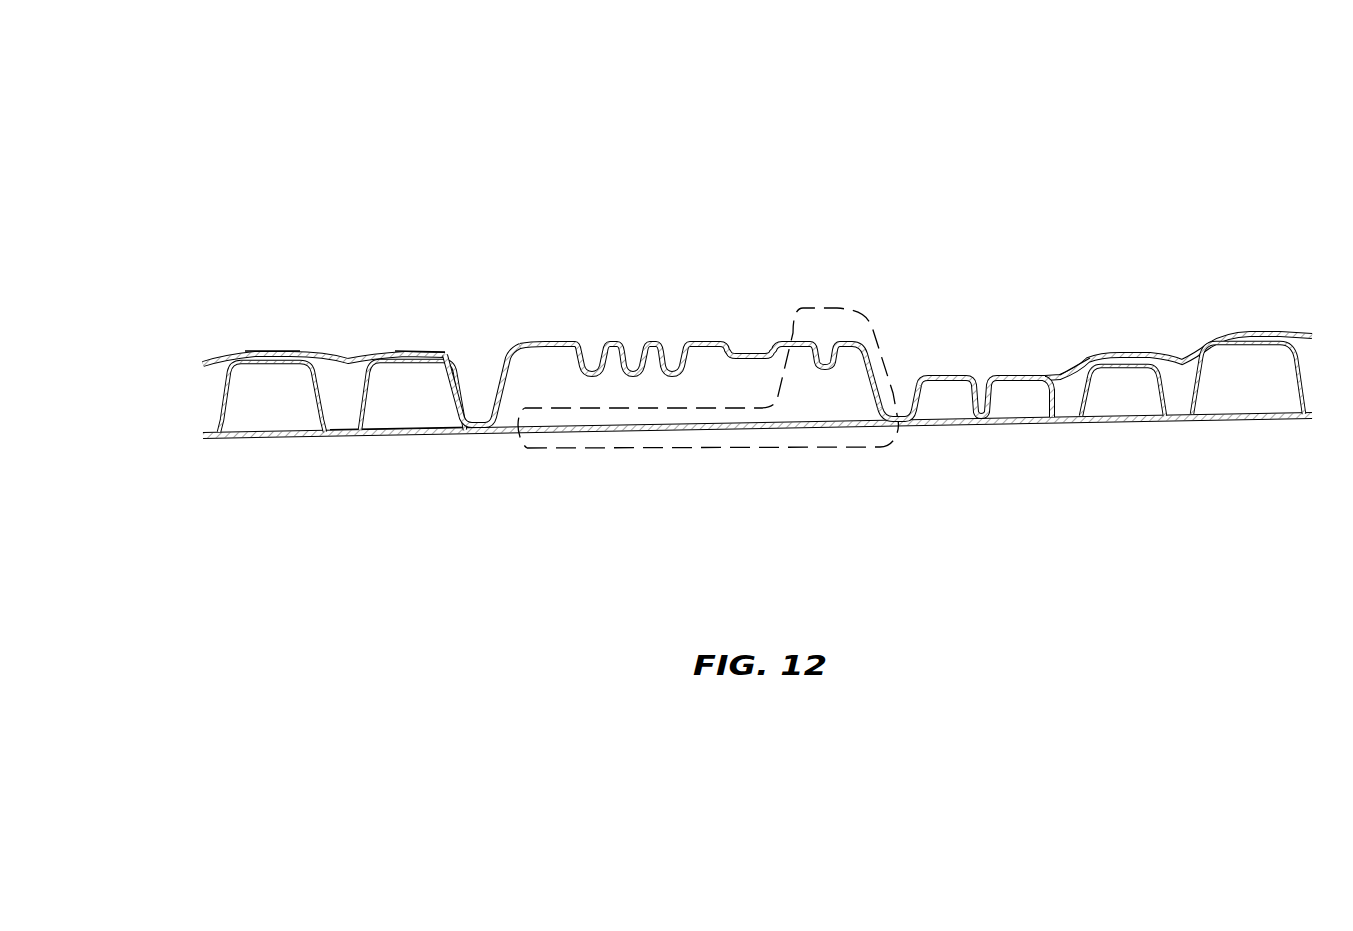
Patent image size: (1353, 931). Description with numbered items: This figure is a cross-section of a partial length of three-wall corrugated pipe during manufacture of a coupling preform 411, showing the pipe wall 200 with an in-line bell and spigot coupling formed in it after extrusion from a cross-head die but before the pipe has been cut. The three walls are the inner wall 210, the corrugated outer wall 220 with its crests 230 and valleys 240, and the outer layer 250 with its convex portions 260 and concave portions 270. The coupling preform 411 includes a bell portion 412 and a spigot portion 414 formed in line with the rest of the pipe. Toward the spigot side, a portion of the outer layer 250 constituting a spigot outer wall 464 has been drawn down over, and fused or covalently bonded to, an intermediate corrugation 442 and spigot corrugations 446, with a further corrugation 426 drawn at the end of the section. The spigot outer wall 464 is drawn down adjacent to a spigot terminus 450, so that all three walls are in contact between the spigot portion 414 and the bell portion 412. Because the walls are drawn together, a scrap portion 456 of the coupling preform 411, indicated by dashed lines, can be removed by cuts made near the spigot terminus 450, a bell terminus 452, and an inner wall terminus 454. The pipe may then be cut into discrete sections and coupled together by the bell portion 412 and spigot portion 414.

The pipe wall 200 is at (262, 170).
The inner wall 210 is at (233, 439).
The corrugated outer wall 220 is at (216, 398).
The crest 230 is at (411, 362).
The valley 240 is at (340, 437).
The outer layer 250 is at (203, 360).
The convex portion 260 is at (410, 347).
The concave portion 270 is at (340, 347).
The coupling preform 411 is at (952, 126).
The bell portion 412 is at (638, 236).
The spigot portion 414 is at (1127, 230).
The large hollow rib 426 is at (1256, 392).
The intermediate corrugation 442 is at (1127, 402).
The spigot corrugations 446 is at (1017, 407).
The spigot terminus 450 is at (903, 424).
The bell terminus 452 is at (793, 340).
The inner wall terminus 454 is at (508, 432).
The scrap portion 456 is at (743, 450).
The spigot outer wall 464 is at (1063, 372).